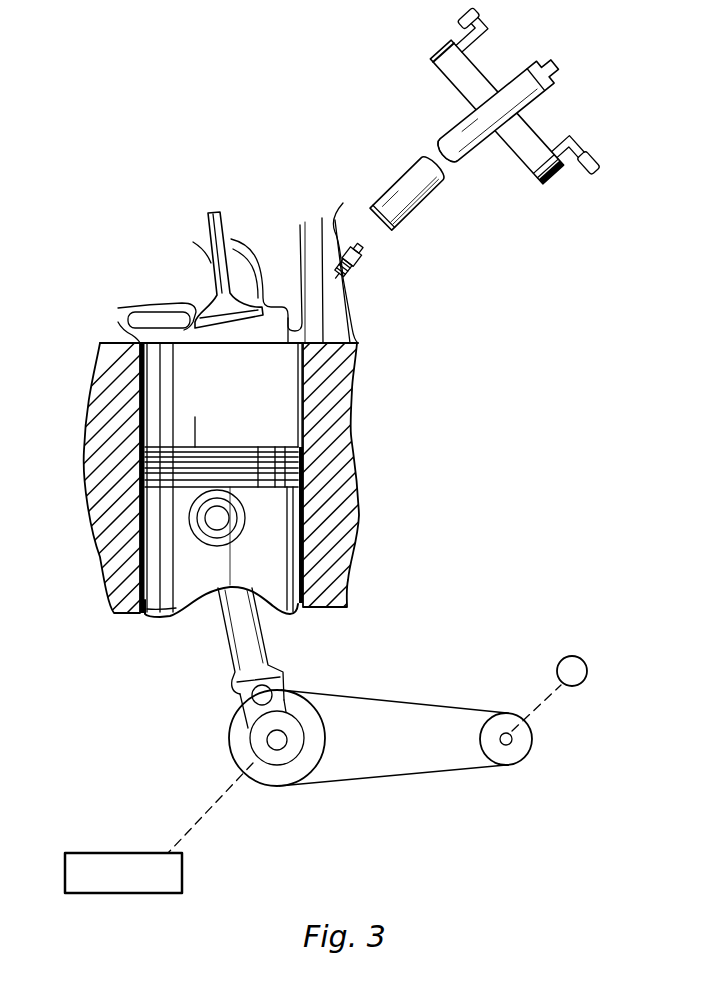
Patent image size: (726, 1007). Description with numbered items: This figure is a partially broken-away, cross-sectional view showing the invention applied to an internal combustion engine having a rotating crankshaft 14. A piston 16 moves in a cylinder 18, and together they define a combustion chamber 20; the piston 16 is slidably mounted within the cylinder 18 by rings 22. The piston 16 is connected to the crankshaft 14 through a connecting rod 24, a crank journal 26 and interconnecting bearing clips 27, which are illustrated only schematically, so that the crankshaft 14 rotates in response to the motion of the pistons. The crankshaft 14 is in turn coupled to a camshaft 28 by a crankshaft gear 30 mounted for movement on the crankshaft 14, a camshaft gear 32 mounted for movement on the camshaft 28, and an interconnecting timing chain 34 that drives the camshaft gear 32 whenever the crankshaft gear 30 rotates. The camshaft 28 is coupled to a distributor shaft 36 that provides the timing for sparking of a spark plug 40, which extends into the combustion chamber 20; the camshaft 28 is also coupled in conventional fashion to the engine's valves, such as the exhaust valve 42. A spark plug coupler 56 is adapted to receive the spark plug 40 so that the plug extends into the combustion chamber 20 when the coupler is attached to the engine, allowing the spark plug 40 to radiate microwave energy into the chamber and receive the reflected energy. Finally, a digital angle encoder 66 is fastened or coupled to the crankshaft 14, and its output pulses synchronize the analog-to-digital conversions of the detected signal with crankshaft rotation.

The crankshaft 14 is at (277, 744).
The piston 16 is at (165, 617).
The cylinder 18 is at (102, 538).
The combustion chamber 20 is at (293, 381).
The rings 22 is at (140, 456).
The connecting rod 24 is at (262, 640).
The crank journal 26 is at (250, 728).
The bearing clips 27 is at (283, 670).
The camshaft 28 is at (509, 743).
The crankshaft gear 30 is at (317, 770).
The camshaft gear 32 is at (515, 714).
The timing chain 34 is at (397, 700).
The distributor shaft 36 is at (578, 655).
The spark plug 40 is at (360, 266).
The exhaust valve 42 is at (220, 235).
The spark plug coupler 56 is at (495, 67).
The digital angle encoder 66 is at (157, 895).